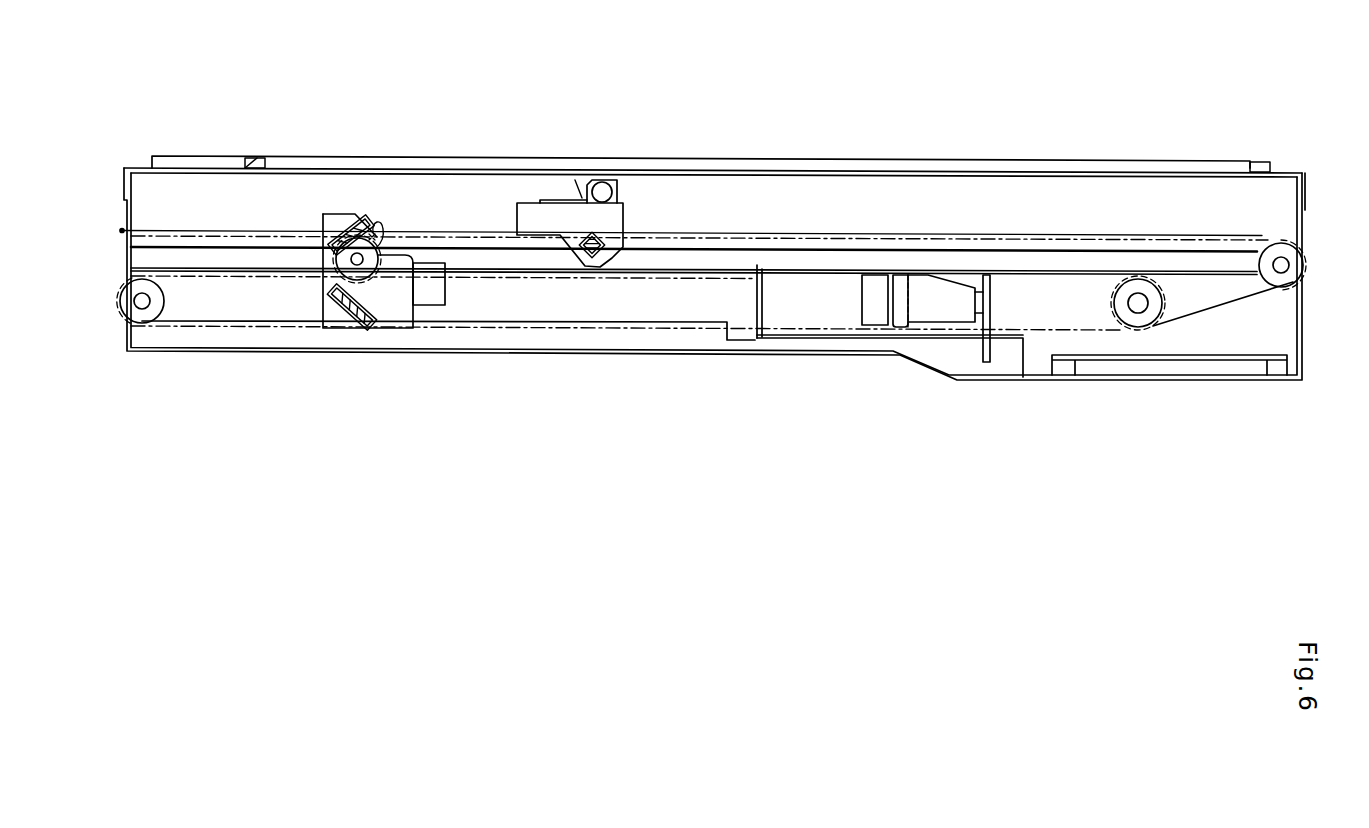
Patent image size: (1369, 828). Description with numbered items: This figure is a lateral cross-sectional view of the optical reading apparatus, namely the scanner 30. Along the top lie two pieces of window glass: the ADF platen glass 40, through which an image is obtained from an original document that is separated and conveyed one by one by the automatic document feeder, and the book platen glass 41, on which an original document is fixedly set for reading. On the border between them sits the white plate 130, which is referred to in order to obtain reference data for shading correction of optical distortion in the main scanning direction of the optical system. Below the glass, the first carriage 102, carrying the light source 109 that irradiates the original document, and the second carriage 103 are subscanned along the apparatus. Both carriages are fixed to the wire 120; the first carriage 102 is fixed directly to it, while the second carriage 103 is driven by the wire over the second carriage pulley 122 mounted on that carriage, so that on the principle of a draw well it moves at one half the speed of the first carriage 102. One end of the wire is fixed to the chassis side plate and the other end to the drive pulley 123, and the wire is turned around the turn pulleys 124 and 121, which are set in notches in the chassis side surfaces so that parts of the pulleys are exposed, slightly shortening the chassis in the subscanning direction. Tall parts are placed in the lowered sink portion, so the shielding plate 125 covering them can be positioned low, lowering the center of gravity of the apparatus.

The scanner 30 is at (704, 105).
The ADF platen glass 40 is at (198, 158).
The book platen glass 41 is at (498, 158).
The white plate 130 is at (253, 158).
The turn pulley 121 is at (130, 312).
The wire 120 is at (232, 327).
The second carriage 103 is at (400, 317).
The second carriage pulley 122 is at (378, 222).
The first carriage 102 is at (617, 221).
The light source 109 is at (603, 182).
The shielding plate 125 is at (757, 293).
The drive pulley 123 is at (1140, 320).
The turn pulley 124 is at (1298, 257).